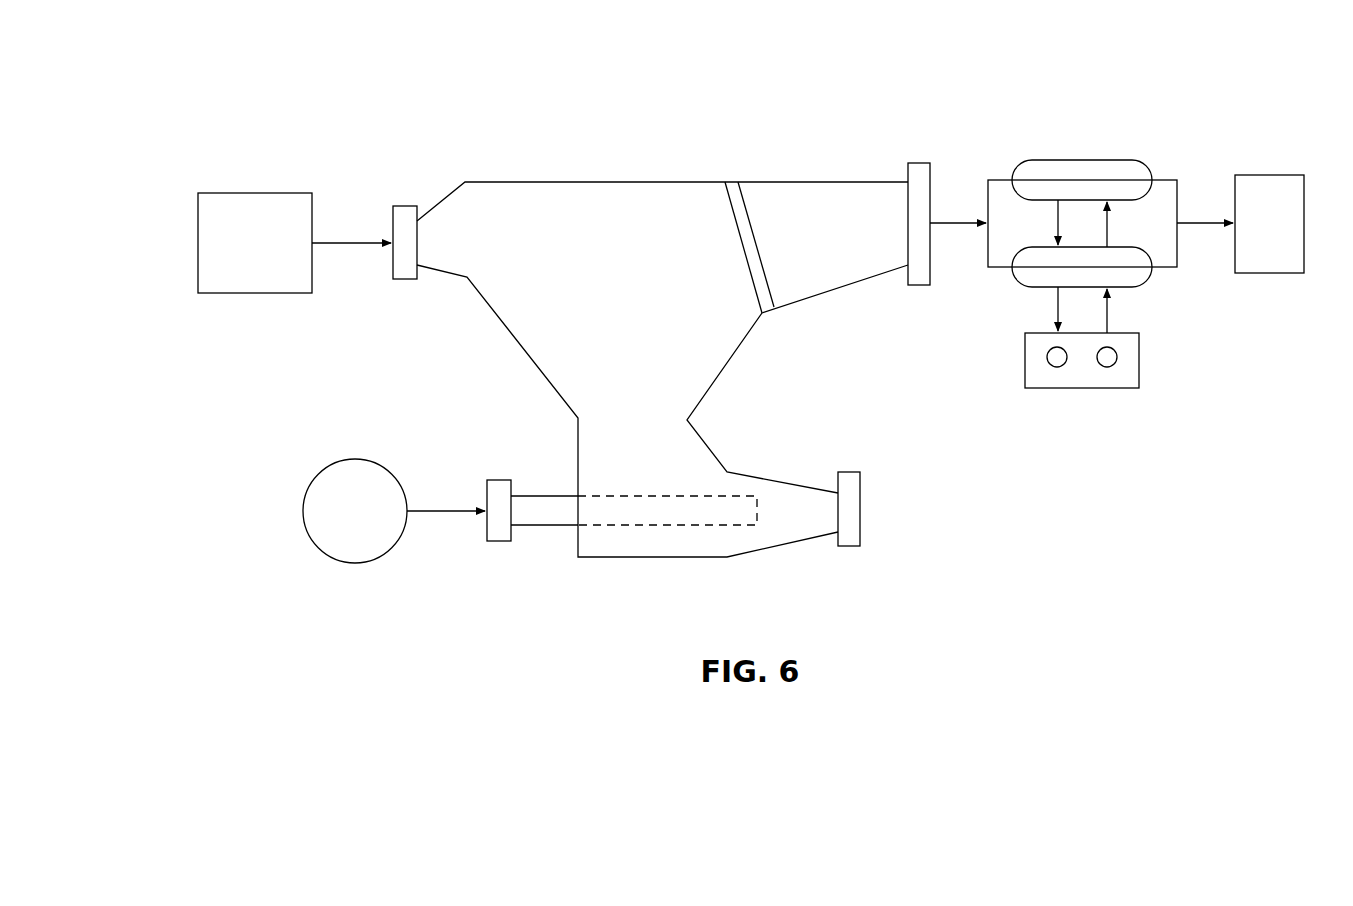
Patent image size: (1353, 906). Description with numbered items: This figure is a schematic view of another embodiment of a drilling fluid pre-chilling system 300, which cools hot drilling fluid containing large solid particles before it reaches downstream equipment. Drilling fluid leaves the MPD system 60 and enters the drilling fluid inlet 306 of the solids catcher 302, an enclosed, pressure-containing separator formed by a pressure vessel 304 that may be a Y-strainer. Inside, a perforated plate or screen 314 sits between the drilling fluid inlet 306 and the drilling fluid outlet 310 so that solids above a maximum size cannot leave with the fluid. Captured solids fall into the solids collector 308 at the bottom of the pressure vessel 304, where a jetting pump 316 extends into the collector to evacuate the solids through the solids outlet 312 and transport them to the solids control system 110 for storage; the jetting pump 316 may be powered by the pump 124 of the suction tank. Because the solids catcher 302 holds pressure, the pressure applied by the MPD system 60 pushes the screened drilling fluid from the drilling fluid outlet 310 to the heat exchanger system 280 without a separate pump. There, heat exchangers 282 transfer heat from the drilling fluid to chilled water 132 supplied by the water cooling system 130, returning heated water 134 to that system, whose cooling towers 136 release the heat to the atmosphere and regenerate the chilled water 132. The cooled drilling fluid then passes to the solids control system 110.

The drilling fluid pre-chilling system 300 is at (186, 110).
The MPD system 60 is at (255, 243).
The drilling fluid inlet 306 is at (405, 212).
The solids catcher 302 is at (510, 182).
The pressure vessel 304 is at (605, 182).
The perforated plate or screen 314 is at (733, 190).
The solids collector 308 is at (590, 472).
The jetting pump 316 is at (543, 513).
The pump 124 is at (355, 511).
The solids outlet 312 is at (853, 508).
The drilling fluid outlet 310 is at (918, 170).
The heat exchanger system 280 is at (1058, 171).
The heat exchangers 282 is at (1081, 167).
The solids control system 110 is at (1268, 175).
The heated water 134 is at (1050, 305).
The chilled water 132 is at (1110, 322).
The water cooling system 130 is at (1130, 376).
The cooling towers 136 is at (1057, 367).